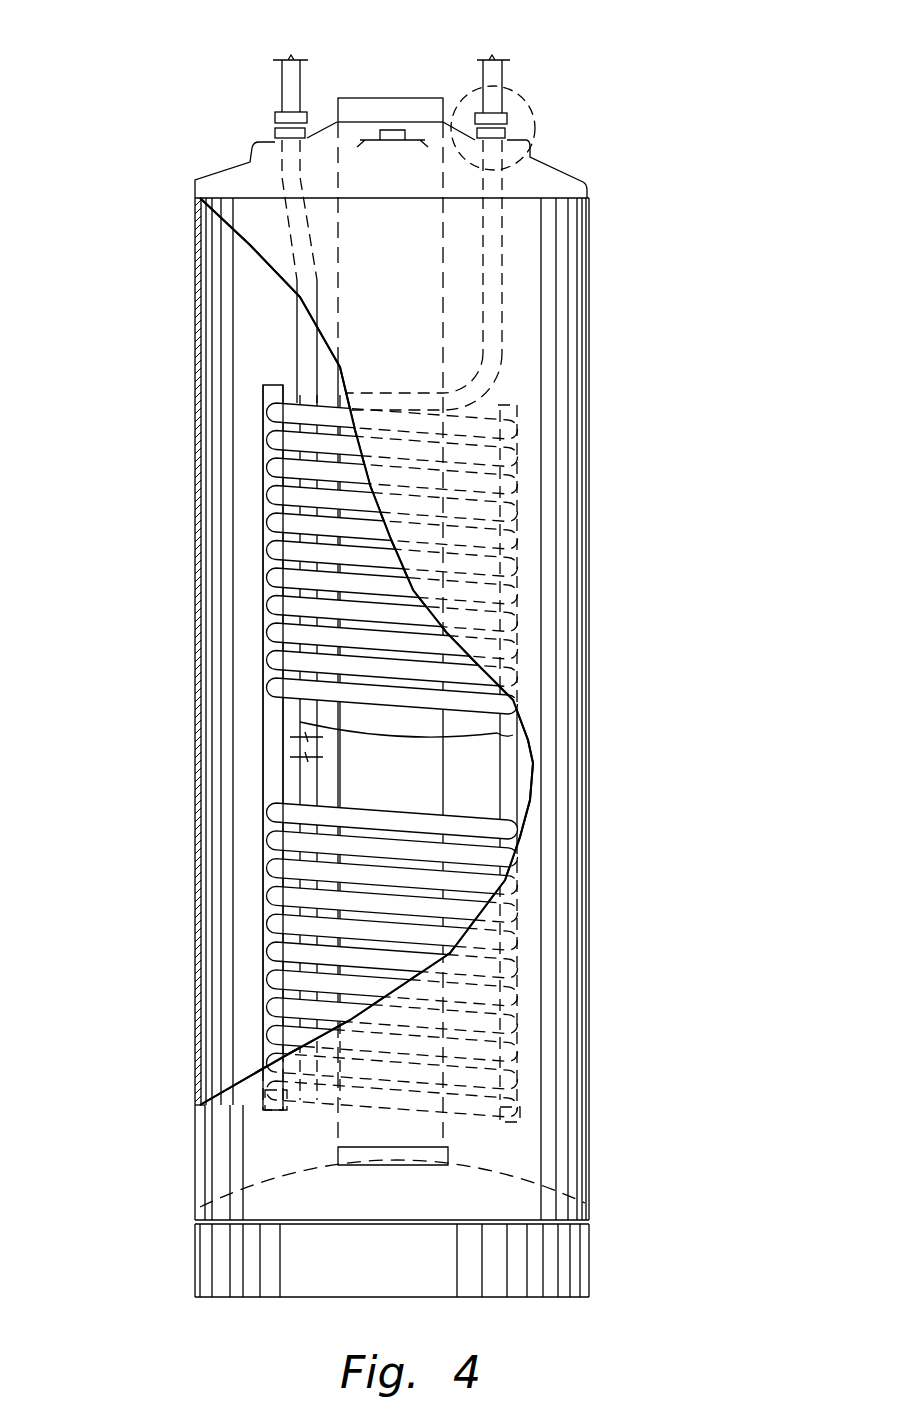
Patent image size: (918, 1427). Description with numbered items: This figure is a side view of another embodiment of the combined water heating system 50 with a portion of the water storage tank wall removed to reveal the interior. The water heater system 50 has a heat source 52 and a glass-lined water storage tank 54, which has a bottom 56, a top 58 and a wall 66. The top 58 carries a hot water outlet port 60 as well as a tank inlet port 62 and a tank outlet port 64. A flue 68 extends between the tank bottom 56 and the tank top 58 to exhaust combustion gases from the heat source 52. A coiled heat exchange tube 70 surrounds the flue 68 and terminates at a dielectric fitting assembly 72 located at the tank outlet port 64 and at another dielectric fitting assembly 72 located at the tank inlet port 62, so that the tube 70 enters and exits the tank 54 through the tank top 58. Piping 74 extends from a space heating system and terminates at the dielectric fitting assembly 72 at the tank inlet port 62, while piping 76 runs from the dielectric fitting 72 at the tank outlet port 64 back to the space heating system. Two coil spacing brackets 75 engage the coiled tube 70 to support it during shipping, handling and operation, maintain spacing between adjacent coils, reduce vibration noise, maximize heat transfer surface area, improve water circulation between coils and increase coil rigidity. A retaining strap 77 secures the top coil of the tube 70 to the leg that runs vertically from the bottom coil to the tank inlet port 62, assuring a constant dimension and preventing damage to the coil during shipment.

The combined water heating system 50 is at (178, 955).
The heat source 52 is at (195, 1250).
The glass-lined water storage tank 54 is at (592, 672).
The tank bottom 56 is at (240, 1185).
The tank top 58 is at (208, 176).
The hot water outlet port 60 is at (397, 130).
The tank inlet port 62 is at (275, 128).
The tank outlet port 64 is at (507, 133).
The tank wall 66 is at (237, 635).
The flue 68 is at (337, 780).
The coiled heat exchange tube 70 is at (277, 688).
The dielectric fitting assembly 72 is at (275, 115).
The piping 74 is at (282, 78).
The coil spacing bracket 75 is at (300, 722).
The piping 76 is at (502, 78).
The retaining strap 77 is at (267, 410).